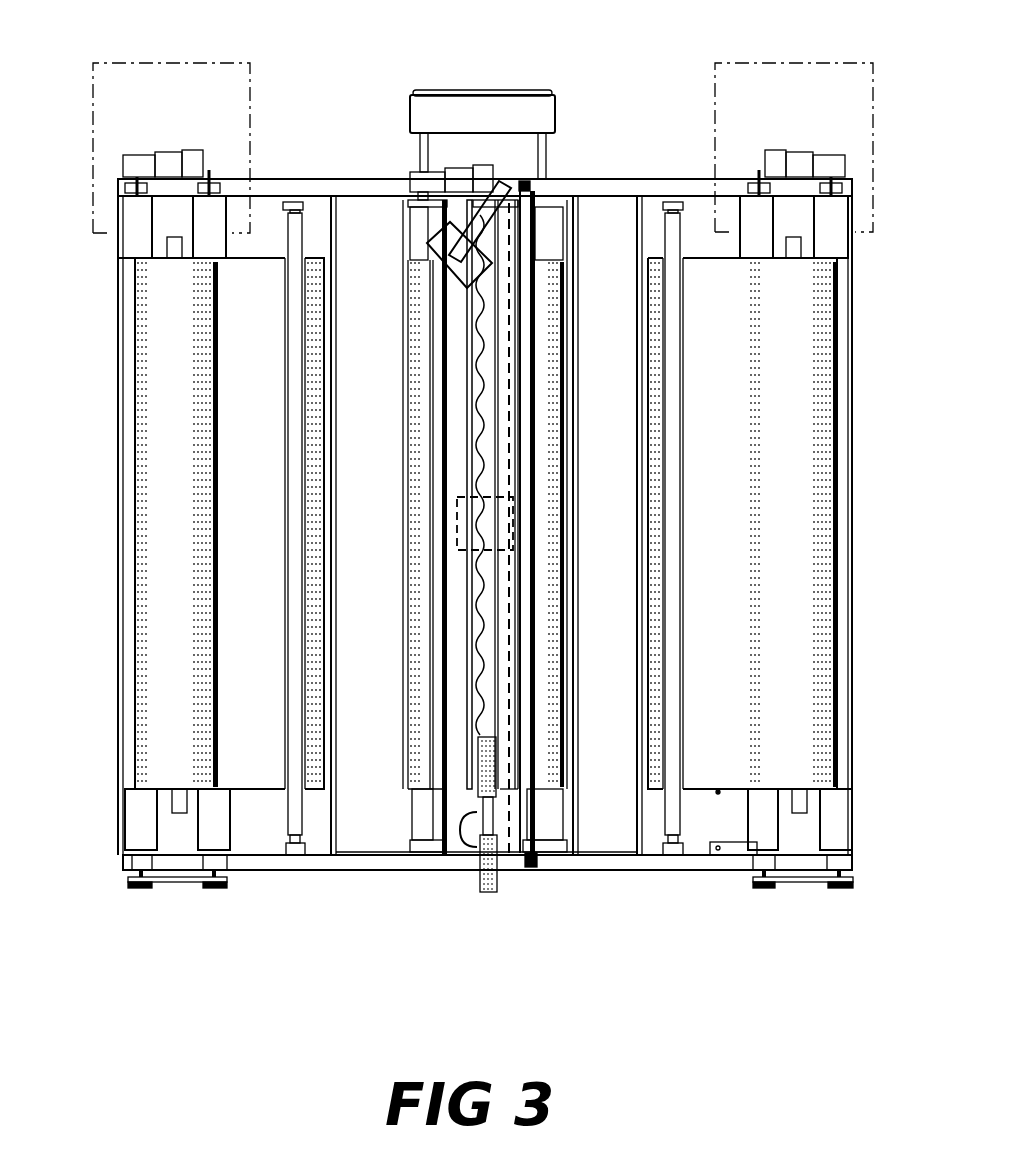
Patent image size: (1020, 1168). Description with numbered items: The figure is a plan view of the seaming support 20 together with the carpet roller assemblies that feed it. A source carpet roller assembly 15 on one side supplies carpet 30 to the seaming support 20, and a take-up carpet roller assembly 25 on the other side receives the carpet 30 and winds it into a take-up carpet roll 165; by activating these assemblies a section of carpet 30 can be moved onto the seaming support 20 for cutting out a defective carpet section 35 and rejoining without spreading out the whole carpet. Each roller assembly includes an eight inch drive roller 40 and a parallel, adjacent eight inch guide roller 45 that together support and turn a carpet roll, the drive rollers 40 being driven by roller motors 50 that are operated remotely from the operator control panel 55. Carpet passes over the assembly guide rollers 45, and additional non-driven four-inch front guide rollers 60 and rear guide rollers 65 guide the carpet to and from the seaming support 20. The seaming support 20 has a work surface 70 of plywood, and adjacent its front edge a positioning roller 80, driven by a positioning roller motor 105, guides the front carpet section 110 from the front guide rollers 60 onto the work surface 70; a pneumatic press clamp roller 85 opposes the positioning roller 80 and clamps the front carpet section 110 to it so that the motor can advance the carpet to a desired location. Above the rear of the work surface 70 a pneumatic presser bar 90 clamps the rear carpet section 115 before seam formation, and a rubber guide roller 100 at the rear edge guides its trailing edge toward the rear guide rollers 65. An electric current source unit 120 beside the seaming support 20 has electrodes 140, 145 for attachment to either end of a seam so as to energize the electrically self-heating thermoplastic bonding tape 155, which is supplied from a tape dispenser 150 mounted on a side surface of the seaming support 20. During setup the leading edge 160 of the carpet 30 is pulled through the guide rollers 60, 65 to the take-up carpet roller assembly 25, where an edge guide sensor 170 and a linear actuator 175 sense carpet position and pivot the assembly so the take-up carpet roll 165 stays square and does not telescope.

The source carpet roller assembly 15 is at (172, 62).
The seaming support 20 is at (447, 842).
The take-up carpet roller assembly 25 is at (765, 62).
The carpet 30 is at (147, 523).
The defective carpet section 35 is at (495, 447).
The drive roller 40 is at (127, 218).
The guide roller 45 is at (212, 222).
The roller motor 50 is at (168, 158).
The operator control panel 55 is at (435, 258).
The front guide roller 60 is at (290, 228).
The rear guide roller 65 is at (668, 215).
The work surface 70 is at (498, 842).
The positioning roller 80 is at (416, 243).
The pneumatic press clamp roller 85 is at (437, 357).
The pneumatic presser bar 90 is at (527, 327).
The rubber guide roller 100 is at (548, 228).
The positioning roller motor 105 is at (450, 177).
The front carpet section 110 is at (278, 510).
The rear carpet section 115 is at (735, 560).
The electric current source unit 120 is at (510, 512).
The electrode 140 is at (493, 182).
The electrode 145 is at (465, 815).
The tape dispenser 150 is at (490, 893).
The electrically self-heating thermoplastic bonding tape 155 is at (485, 757).
The leading edge 160 is at (467, 622).
The take-up carpet roll 165 is at (810, 343).
The edge guide sensor 170 is at (717, 794).
The linear actuator 175 is at (732, 855).